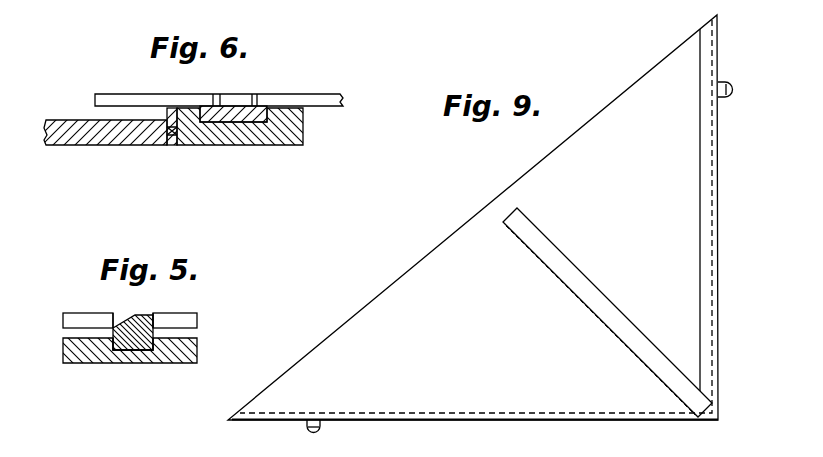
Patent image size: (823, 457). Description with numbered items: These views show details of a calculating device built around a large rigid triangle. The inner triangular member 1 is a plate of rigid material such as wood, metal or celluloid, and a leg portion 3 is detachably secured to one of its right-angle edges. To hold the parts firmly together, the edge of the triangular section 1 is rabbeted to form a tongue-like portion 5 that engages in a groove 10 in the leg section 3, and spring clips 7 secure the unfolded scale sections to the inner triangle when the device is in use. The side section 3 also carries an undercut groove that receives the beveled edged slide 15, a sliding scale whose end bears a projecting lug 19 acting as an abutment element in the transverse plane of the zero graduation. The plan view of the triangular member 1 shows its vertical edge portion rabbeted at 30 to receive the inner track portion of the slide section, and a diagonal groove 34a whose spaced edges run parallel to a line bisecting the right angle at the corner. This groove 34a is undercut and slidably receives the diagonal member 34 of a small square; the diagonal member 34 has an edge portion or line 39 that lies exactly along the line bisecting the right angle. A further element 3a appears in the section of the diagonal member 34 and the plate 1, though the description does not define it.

In FIG. 6, the inner triangular member 1 is at (118, 138).
In FIG. 5, the inner triangular member 1 is at (173, 357).
In FIG. 9, the inner triangular member 1 is at (458, 242).
In FIG. 6, the leg portion 3 is at (262, 155).
In FIG. 5, the leg portion 3 is at (64, 303).
In FIG. 5, the rivet 3a is at (127, 348).
In FIG. 6, the tongue-like portion 5 is at (176, 134).
In FIG. 9, the spring clip 7 is at (727, 84).
In FIG. 6, the groove 10 is at (186, 134).
In FIG. 6, the beveled edged slide 15 is at (260, 118).
In FIG. 6, the projecting lug 19 is at (233, 103).
In FIG. 9, the rabbeted vertical edge portion 30 is at (702, 200).
In FIG. 5, the diagonal member 34 is at (143, 317).
In FIG. 9, the diagonal groove 34a is at (590, 286).
In FIG. 5, the edge portion 39 is at (115, 328).